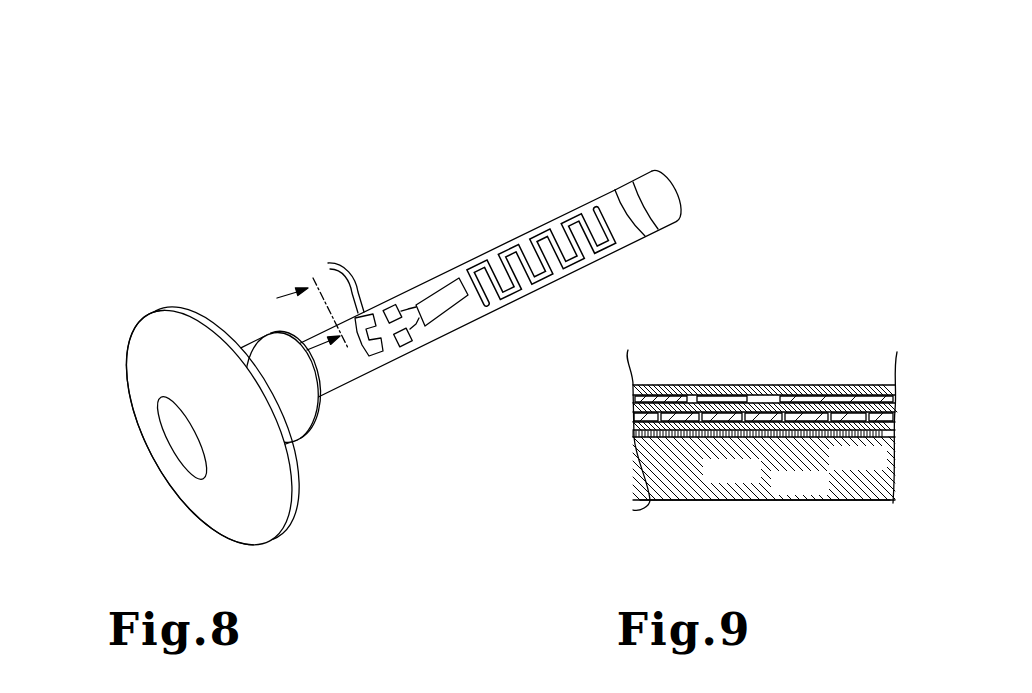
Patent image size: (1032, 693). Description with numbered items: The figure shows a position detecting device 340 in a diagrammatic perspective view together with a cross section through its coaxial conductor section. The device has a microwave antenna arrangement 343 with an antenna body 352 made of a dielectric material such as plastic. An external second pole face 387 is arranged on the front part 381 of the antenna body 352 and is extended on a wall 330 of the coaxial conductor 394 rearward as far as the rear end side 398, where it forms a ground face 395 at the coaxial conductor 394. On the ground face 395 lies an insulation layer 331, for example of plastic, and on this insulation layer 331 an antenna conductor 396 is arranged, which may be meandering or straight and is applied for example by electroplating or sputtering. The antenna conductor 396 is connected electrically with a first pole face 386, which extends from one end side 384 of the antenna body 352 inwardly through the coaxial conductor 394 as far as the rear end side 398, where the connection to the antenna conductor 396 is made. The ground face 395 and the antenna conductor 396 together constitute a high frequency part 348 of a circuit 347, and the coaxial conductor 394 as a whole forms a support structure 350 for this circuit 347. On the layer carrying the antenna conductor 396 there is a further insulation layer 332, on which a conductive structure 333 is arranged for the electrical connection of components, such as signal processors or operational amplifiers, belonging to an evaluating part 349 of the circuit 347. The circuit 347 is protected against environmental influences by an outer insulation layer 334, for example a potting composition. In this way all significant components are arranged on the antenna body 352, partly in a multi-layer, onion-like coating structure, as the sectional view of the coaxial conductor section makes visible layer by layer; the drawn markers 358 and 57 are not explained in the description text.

In FIG. 8, the position detecting device 340 is at (524, 214).
In FIG. 8, the microwave antenna arrangement 343 is at (388, 249).
In FIG. 8, the circuit 347 is at (517, 220).
In FIG. 8, the high frequency part 348 is at (610, 174).
In FIG. 8, the evaluating part 349 is at (431, 262).
In FIG. 8, the ground face 395 is at (653, 171).
In FIG. 9, the ground face 395 is at (773, 438).
In FIG. 8, the rear end side 398 is at (670, 183).
In FIG. 8, the support structure 350 is at (680, 208).
In FIG. 8, the insulation layer 331 is at (627, 237).
In FIG. 9, the insulation layer 331 is at (705, 433).
In FIG. 8, the antenna conductor 396 is at (590, 247).
In FIG. 9, the antenna conductor 396 is at (800, 393).
In FIG. 8, the further insulation layer 332 is at (485, 313).
In FIG. 9, the further insulation layer 332 is at (753, 400).
In FIG. 8, the conductive structure 333 is at (413, 337).
In FIG. 9, the conductive structure 333 is at (697, 388).
In FIG. 8, the component 358 is at (403, 347).
In FIG. 8, the clip 57 is at (326, 263).
In FIG. 8, the second pole face 387 is at (186, 303).
In FIG. 8, the front part 381 is at (267, 515).
In FIG. 8, the antenna body 352 is at (128, 345).
In FIG. 8, the first pole face 386 is at (150, 432).
In FIG. 8, the end side 384 is at (180, 483).
In FIG. 9, the wall 330 is at (683, 483).
In FIG. 9, the coaxial conductor 394 is at (778, 388).
In FIG. 9, the outer insulation layer 334 is at (780, 397).